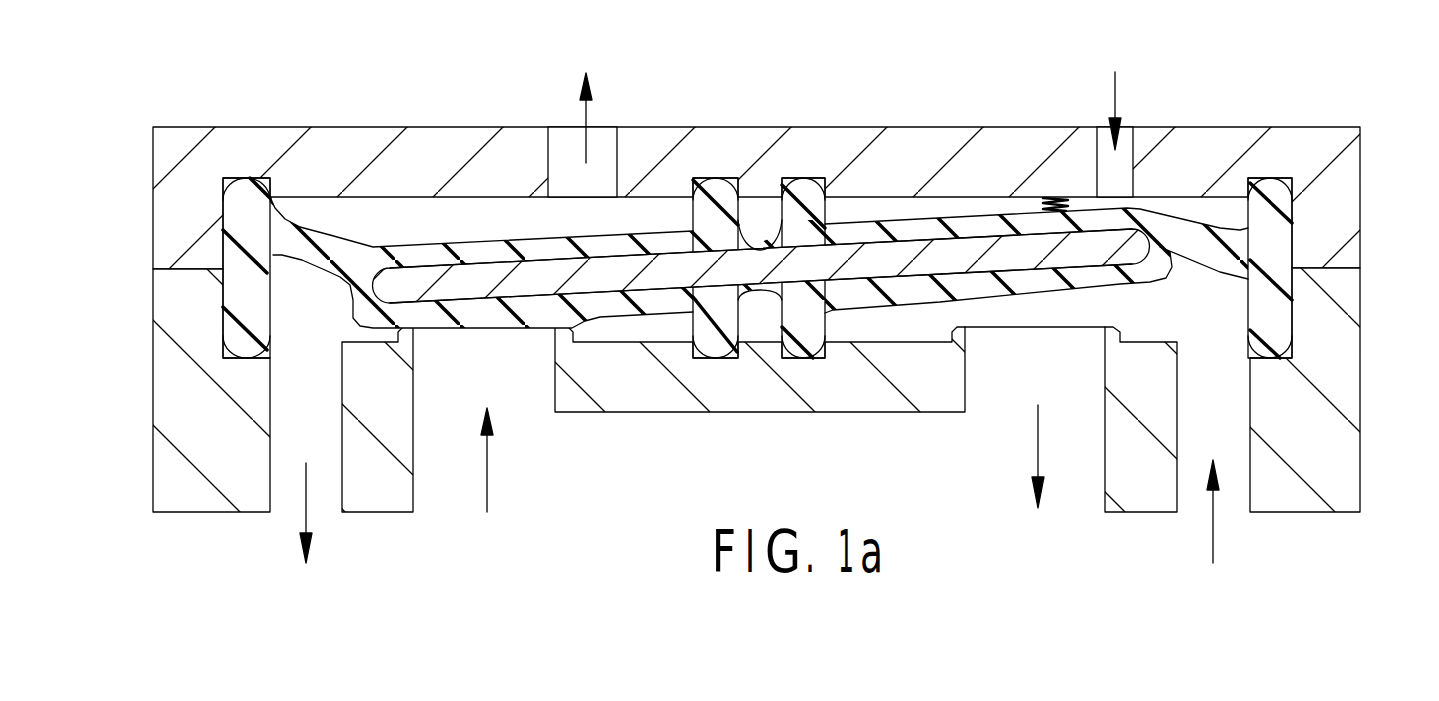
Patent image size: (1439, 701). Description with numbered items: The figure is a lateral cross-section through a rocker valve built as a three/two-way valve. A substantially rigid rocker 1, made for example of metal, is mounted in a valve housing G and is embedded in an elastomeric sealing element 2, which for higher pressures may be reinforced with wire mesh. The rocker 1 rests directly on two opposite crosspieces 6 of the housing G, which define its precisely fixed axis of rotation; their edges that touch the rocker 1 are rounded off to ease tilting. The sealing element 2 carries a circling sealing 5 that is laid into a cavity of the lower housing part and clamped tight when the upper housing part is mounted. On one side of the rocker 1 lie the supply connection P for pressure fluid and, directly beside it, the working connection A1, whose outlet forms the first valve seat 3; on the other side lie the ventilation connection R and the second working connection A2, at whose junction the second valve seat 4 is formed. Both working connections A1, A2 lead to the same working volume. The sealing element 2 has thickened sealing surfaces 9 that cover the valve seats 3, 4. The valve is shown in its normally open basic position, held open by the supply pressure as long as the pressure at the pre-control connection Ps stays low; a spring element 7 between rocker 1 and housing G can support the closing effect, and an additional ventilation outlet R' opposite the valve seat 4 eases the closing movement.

The rocker 1 is at (490, 275).
The elastomeric sealing element 2 is at (897, 220).
The first valve seat 3 is at (1090, 337).
The second valve seat 4 is at (553, 335).
The circling sealing 5 is at (248, 181).
The crosspiece 6 is at (763, 210).
The spring element 7 is at (1055, 197).
The sealing surfaces 9 is at (460, 318).
The valve housing G is at (1327, 150).
The ventilation connection R is at (275, 530).
The additional ventilation outlet R' is at (567, 96).
The pre-control connection Ps is at (1115, 93).
The first working connection A1 is at (1038, 442).
The second working connection A2 is at (487, 457).
The supply connection P is at (1213, 523).